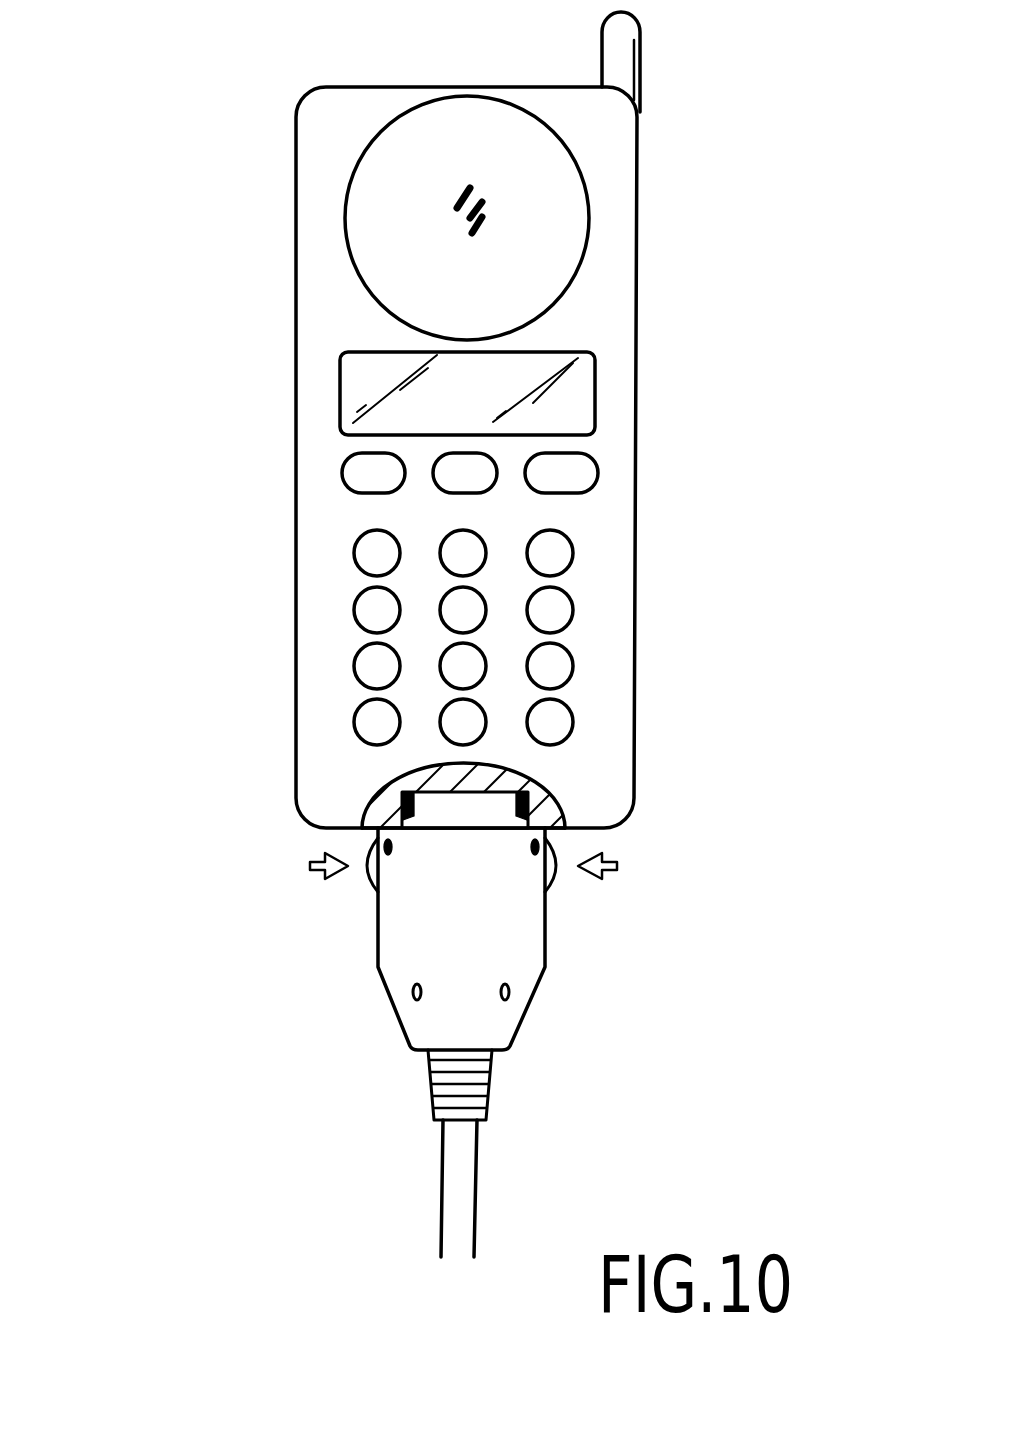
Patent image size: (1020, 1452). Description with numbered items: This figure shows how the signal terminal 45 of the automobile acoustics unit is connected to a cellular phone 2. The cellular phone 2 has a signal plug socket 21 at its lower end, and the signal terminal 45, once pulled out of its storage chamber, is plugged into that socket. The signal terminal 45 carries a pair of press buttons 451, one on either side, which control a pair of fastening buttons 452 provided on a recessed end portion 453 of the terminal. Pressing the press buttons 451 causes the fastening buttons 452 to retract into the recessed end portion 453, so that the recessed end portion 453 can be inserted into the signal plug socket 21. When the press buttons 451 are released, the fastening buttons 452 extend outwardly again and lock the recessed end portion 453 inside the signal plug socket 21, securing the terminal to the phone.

The cellular phone 2 is at (668, 427).
The signal plug socket 21 is at (557, 784).
The signal terminal 45 is at (368, 997).
The press buttons 451 is at (367, 888).
The fastening buttons 452 is at (373, 803).
The recessed end portion 453 is at (482, 812).